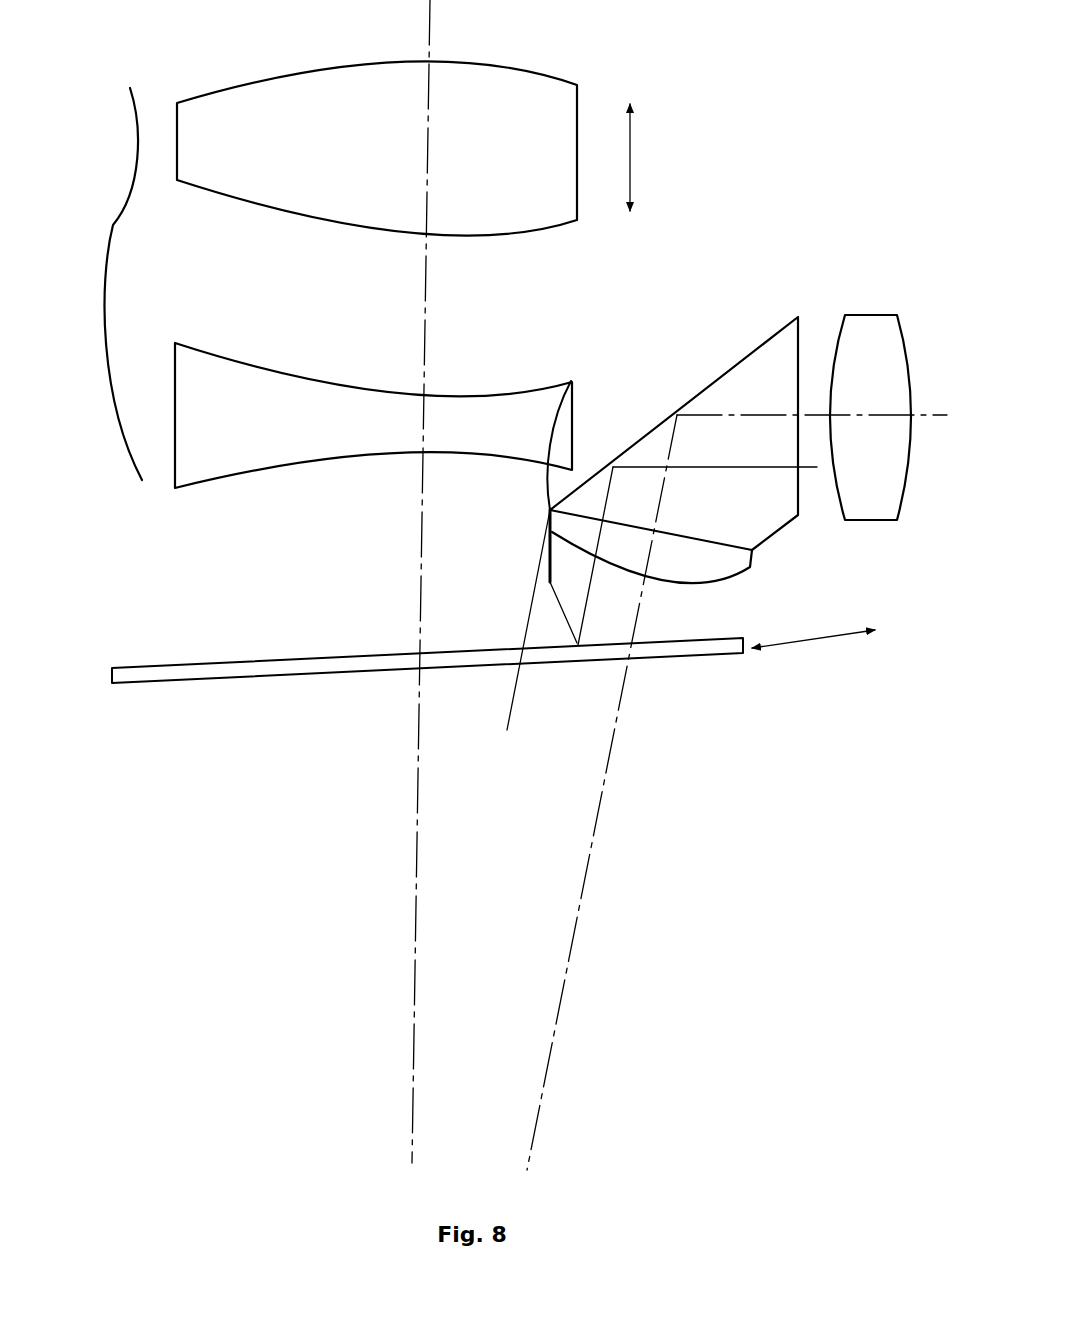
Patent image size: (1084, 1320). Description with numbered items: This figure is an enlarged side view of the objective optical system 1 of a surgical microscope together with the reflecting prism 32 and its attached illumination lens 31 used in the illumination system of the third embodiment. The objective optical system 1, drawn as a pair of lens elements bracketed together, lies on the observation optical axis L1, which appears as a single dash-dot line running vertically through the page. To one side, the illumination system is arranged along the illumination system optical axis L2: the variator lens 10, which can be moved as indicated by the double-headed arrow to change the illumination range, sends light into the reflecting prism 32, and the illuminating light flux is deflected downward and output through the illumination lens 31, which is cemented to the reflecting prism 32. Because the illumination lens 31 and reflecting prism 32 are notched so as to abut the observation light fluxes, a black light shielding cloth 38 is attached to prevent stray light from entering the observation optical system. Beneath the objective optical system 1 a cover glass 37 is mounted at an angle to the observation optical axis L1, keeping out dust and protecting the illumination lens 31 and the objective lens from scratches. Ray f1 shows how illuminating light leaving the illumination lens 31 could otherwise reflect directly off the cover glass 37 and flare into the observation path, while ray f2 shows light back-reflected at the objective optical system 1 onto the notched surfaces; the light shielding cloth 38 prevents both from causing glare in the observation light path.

The objective optical system 1 is at (339, 274).
The variator lens 10 is at (857, 315).
The light shielding cloth 38 is at (571, 381).
The reflecting prism 32 is at (767, 525).
The illumination lens 31 is at (705, 580).
The cover glass 37 is at (115, 683).
The ray f1 is at (580, 618).
The ray f2 is at (530, 607).
The observation optical axis L1 is at (412, 958).
The illumination system optical axis L2 is at (573, 957).